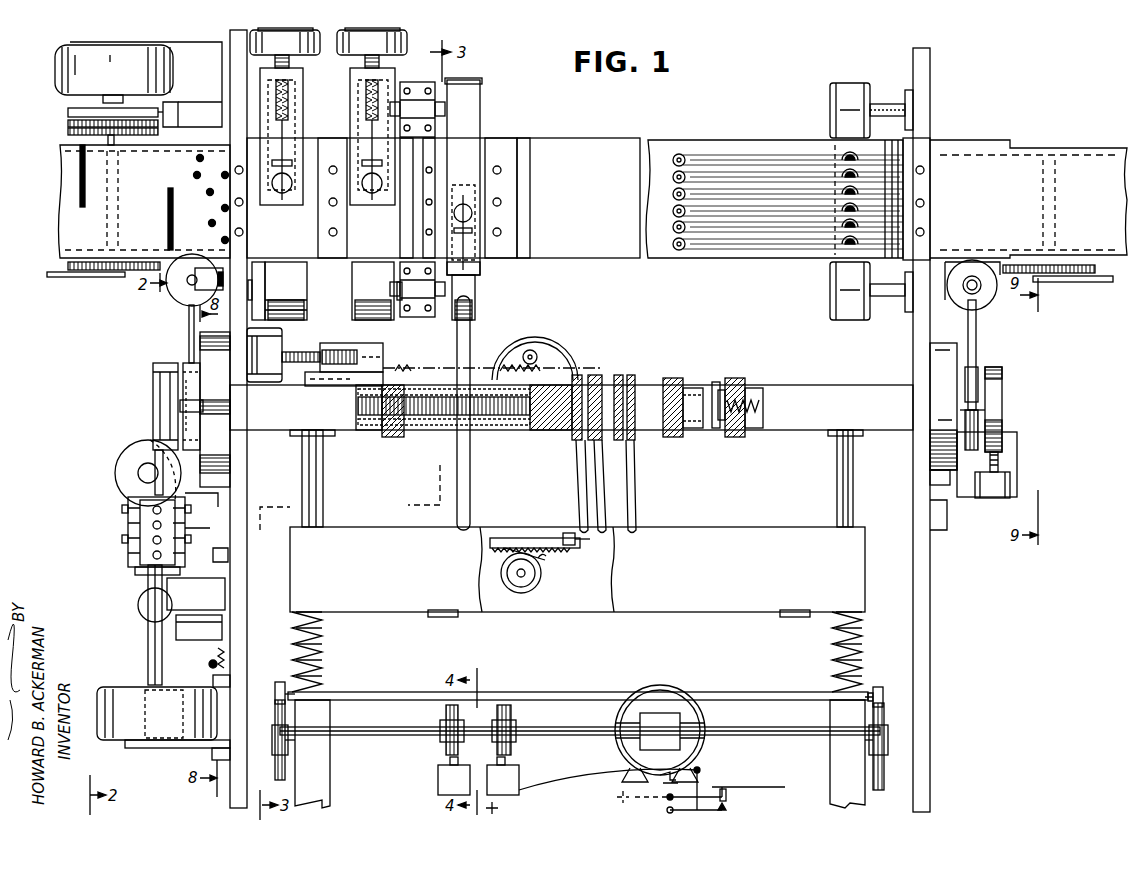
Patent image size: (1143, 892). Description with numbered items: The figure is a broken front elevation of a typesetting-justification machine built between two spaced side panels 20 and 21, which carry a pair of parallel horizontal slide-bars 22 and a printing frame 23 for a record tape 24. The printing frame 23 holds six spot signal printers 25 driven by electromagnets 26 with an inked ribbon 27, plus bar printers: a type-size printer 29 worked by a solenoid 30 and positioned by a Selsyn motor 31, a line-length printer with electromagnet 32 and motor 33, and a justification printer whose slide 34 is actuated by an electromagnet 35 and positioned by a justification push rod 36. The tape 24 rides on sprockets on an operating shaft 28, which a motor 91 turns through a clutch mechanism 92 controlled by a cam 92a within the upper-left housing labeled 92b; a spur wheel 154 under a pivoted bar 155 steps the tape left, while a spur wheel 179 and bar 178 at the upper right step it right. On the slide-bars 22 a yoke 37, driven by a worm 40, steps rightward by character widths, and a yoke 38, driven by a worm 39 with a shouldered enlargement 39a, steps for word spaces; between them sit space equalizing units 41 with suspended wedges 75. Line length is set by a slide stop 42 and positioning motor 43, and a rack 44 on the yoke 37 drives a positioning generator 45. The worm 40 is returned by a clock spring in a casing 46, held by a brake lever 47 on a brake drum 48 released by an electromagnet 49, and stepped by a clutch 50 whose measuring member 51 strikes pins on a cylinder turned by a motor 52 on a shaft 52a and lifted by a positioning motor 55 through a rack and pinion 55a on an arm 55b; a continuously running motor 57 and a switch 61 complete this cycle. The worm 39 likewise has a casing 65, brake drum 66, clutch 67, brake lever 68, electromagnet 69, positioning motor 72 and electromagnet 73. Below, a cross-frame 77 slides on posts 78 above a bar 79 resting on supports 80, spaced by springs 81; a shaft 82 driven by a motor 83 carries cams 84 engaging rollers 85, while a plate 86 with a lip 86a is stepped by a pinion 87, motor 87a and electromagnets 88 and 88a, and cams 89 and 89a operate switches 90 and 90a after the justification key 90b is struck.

The side panel 20 is at (232, 805).
The side panel 21 is at (930, 755).
The slide-bars 22 is at (348, 425).
The printing frame 23 is at (570, 146).
The record tape 24 is at (1108, 148).
The spot signal printers 25 is at (848, 154).
The electromagnets 26 is at (683, 136).
The inked ribbon 27 is at (856, 84).
The operating shaft 28 is at (110, 138).
The electromagnetic printing means 29 is at (368, 160).
The solenoid 30 is at (378, 200).
The positioning motor 31 is at (407, 42).
The electromagnet 32 is at (288, 200).
The motor 33 is at (292, 51).
The slide 34 is at (482, 272).
The electromagnet 35 is at (463, 204).
The justification push rod 36 is at (470, 335).
The yoke 37 is at (396, 438).
The yoke 38 is at (734, 436).
The worm 39 is at (762, 432).
The shouldered enlargement 39a is at (716, 382).
The worm 40 is at (436, 418).
The space equalizing units 41 is at (636, 368).
The slide stop 42 is at (368, 346).
The positioning motor 43 is at (284, 342).
The rack 44 is at (408, 371).
The positioning generator 45 is at (540, 330).
The casing 46 is at (222, 438).
The brake lever 47 is at (189, 322).
The brake drum 48 is at (185, 363).
The electromagnet 49 is at (175, 292).
The electromagnetic clutch means 50 is at (153, 373).
The measuring member 51 is at (155, 420).
The motor 52 is at (115, 687).
The shaft 52a is at (148, 630).
The positioning motor 55 is at (175, 534).
The rack and pinion 55a is at (210, 662).
The arm 55b is at (196, 594).
The motor 57 is at (222, 628).
The switch 61 is at (140, 607).
The casing 65 is at (936, 368).
The brake drum 66 is at (978, 367).
The electromagnetic clutch 67 is at (1002, 381).
The brake lever 68 is at (978, 318).
The electromagnet 69 is at (998, 293).
The positioning motor 72 is at (1012, 480).
The electromagnet 73 is at (1012, 442).
The wedges 75 is at (633, 510).
The cross-frame 77 is at (703, 530).
The posts 78 is at (323, 481).
The bar 79 is at (400, 696).
The bottom supports 80 is at (330, 762).
The springs 81 is at (322, 638).
The horizontal shaft 82 is at (550, 730).
The motor 83 is at (705, 757).
The cams 84 is at (884, 748).
The rollers 85 is at (878, 687).
The plate 86 is at (516, 538).
The end lip 86a is at (569, 533).
The pinion 87 is at (545, 560).
The electric motor 87a is at (545, 578).
The electromagnet 88 is at (615, 612).
The electromagnet 88a is at (452, 617).
The cam 89 is at (446, 745).
The cam 89a is at (511, 745).
The switch 90 is at (438, 779).
The holding switch 90a is at (518, 790).
The justification key 90b is at (728, 796).
The motor 91 is at (55, 72).
The clutch mechanism 92 is at (68, 122).
The cam 92a is at (68, 110).
The housing 92b is at (175, 105).
The spur wheel 154 is at (68, 265).
The pivoted bar 155 is at (62, 277).
The bar 178 is at (1108, 282).
The spur wheel 179 is at (1058, 273).